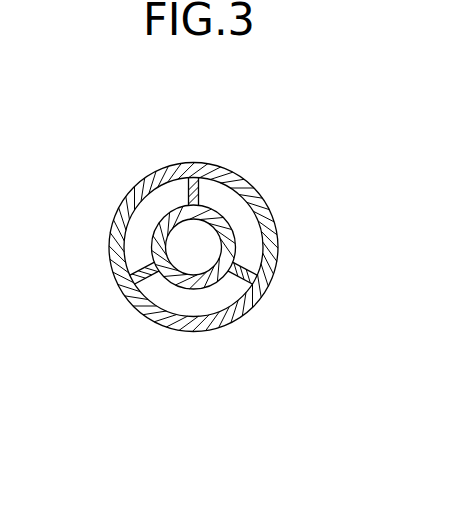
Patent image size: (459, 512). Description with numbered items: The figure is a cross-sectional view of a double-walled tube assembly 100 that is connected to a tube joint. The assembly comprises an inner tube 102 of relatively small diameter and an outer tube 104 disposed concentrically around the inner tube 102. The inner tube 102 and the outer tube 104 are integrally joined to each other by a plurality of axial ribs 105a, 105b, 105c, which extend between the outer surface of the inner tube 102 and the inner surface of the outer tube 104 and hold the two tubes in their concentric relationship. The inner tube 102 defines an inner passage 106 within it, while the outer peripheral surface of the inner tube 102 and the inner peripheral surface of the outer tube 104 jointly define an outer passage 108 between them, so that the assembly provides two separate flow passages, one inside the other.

The double-walled tube assembly 100 is at (223, 160).
The inner tube 102 is at (204, 284).
The outer tube 104 is at (272, 238).
The axial rib 105a is at (187, 183).
The axial rib 105b is at (253, 278).
The axial rib 105c is at (151, 274).
The inner passage 106 is at (182, 243).
The outer passage 108 is at (238, 205).